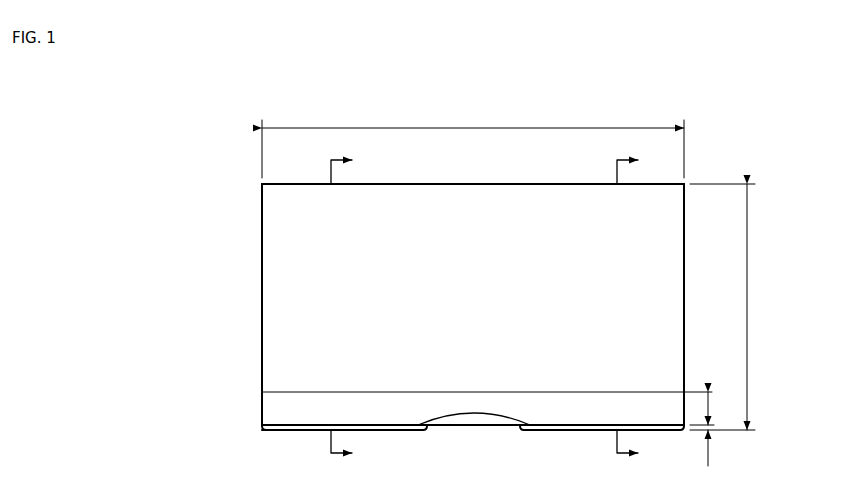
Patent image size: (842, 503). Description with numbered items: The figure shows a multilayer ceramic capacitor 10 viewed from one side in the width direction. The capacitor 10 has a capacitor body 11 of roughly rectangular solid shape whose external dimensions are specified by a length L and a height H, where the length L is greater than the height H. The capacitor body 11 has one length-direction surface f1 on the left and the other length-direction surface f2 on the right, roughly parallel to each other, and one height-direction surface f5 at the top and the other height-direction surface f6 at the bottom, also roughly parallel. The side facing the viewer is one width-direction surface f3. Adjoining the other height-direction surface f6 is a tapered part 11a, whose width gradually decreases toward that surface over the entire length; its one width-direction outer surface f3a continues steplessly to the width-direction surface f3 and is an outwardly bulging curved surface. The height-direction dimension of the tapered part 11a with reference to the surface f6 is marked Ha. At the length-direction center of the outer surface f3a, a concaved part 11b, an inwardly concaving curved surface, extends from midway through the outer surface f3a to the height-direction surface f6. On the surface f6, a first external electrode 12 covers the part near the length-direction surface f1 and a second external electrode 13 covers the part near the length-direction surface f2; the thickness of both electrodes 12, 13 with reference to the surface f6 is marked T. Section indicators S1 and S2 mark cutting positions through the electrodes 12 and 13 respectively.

The multilayer ceramic capacitor 10 is at (258, 208).
The capacitor body 11 is at (262, 268).
The tapered part 11a is at (275, 407).
The concaved part 11b is at (455, 421).
The first external electrode 12 is at (362, 432).
The second external electrode 13 is at (577, 432).
The one length-direction surface f1 is at (262, 303).
The other length-direction surface f2 is at (684, 303).
The one width-direction surface f3 is at (295, 340).
The one width-direction outer surface of the tapered part f3a is at (305, 400).
The one height-direction surface f5 is at (493, 184).
The other height-direction surface f6 is at (493, 428).
The section line S1 is at (333, 313).
The section line S2 is at (620, 313).
The length L is at (473, 144).
The height H is at (726, 307).
The height-direction dimension of the tapered part Ha is at (712, 408).
The thickness of the external electrodes T is at (717, 448).